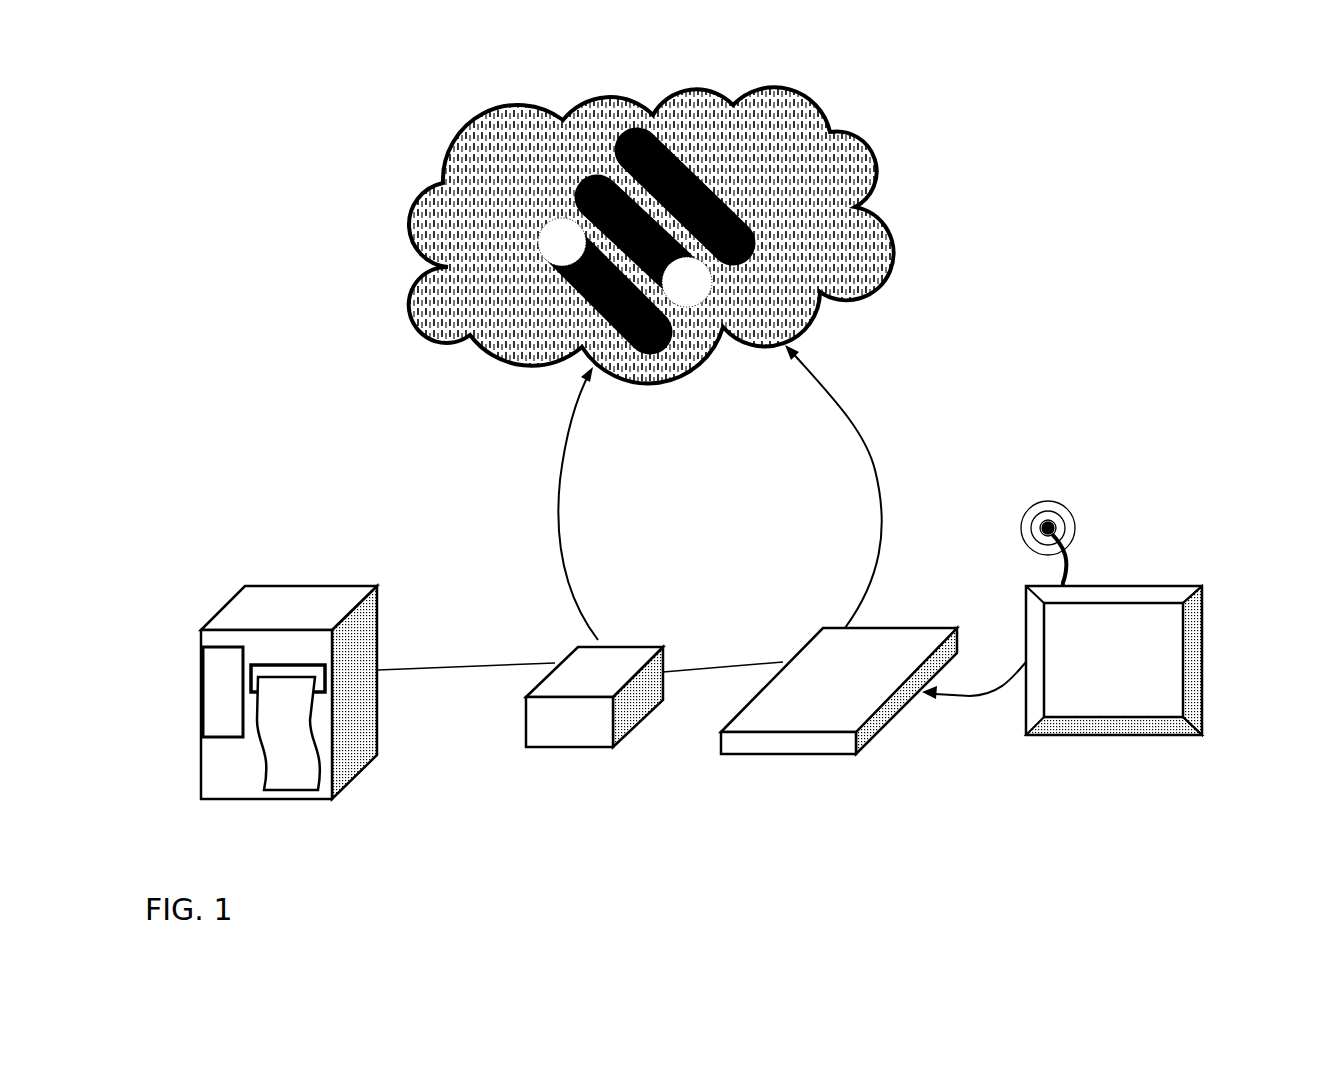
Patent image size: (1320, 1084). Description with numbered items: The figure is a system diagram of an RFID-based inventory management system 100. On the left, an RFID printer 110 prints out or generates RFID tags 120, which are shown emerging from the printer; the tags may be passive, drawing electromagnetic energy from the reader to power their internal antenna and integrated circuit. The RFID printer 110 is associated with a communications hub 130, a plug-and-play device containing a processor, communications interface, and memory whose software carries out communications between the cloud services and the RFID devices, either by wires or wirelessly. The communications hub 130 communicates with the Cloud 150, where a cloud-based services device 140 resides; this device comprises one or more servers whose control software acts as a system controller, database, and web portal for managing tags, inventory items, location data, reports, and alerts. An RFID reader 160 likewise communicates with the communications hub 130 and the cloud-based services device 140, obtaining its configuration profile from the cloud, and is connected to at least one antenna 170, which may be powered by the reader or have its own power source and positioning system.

The system 100 is at (1025, 105).
The RFID printer 110 is at (340, 588).
The RFID tags 120 is at (333, 792).
The communications hub 130 is at (568, 748).
The cloud-based services device 140 is at (705, 300).
The Cloud 150 is at (888, 250).
The RFID reader 160 is at (825, 753).
The antenna 170 is at (1097, 589).